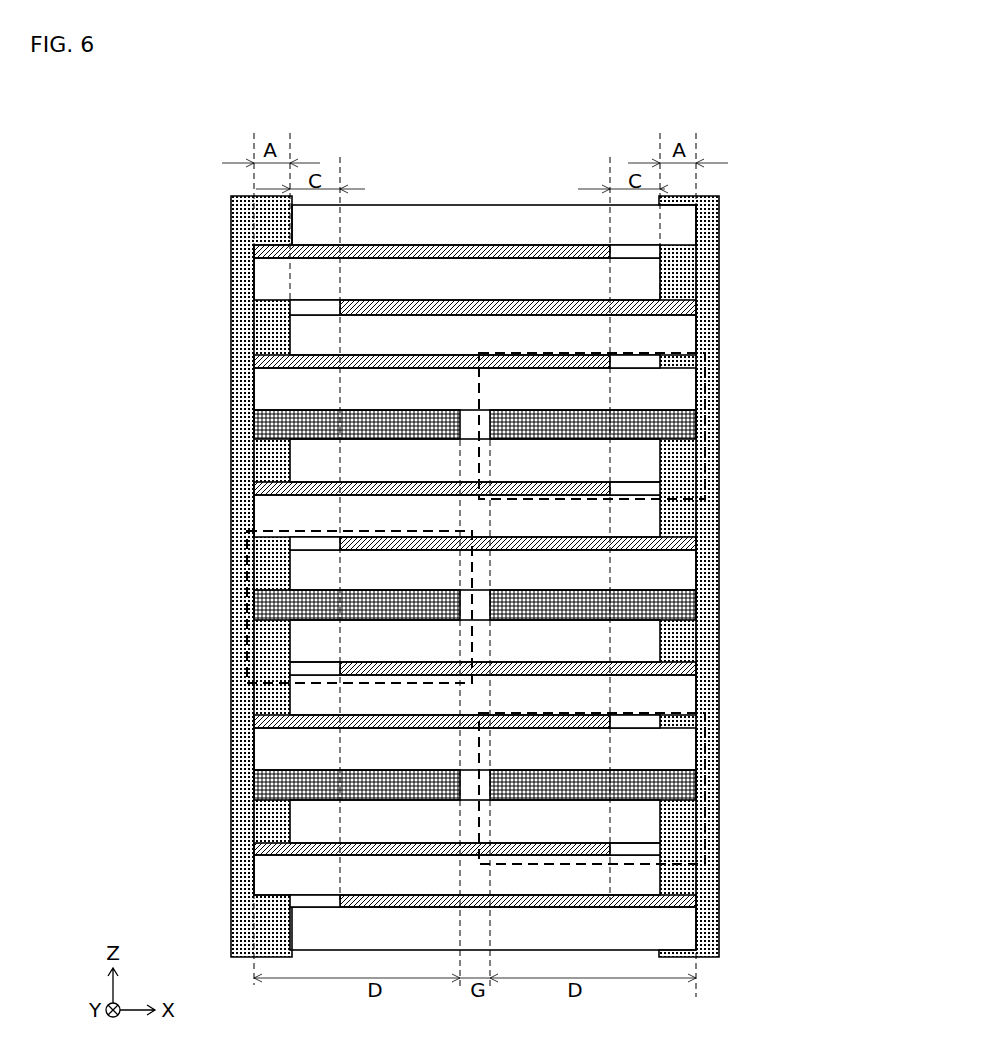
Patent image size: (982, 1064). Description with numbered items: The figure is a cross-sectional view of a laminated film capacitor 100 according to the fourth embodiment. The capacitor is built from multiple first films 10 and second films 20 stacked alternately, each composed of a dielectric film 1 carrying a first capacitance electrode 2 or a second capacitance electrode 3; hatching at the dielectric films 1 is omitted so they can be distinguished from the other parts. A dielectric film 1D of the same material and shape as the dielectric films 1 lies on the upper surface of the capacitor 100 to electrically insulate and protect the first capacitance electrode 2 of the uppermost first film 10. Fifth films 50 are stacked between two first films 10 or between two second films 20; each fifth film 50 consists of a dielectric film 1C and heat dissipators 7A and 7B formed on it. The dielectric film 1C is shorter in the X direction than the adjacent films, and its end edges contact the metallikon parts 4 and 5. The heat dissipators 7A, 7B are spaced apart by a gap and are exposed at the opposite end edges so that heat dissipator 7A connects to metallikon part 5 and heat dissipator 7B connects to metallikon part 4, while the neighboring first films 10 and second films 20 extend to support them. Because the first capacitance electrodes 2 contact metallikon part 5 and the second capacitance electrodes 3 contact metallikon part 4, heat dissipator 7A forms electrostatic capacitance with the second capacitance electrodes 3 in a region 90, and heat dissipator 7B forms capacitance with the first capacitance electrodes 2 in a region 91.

The laminated film capacitor 100 is at (474, 557).
The dielectric film 1D is at (690, 225).
The dielectric film 1 is at (258, 278).
The first capacitance electrode 2 is at (258, 250).
The second capacitance electrode 3 is at (700, 308).
The first film 10 is at (397, 561).
The second film 20 is at (559, 588).
The fifth film 50 is at (474, 605).
The heat dissipator 7A is at (262, 432).
The heat dissipator 7B is at (503, 421).
The dielectric film 1C is at (300, 466).
The region 90 is at (246, 608).
The region 91 is at (705, 445).
The metallikon part 4 is at (718, 950).
The metallikon part 5 is at (231, 951).